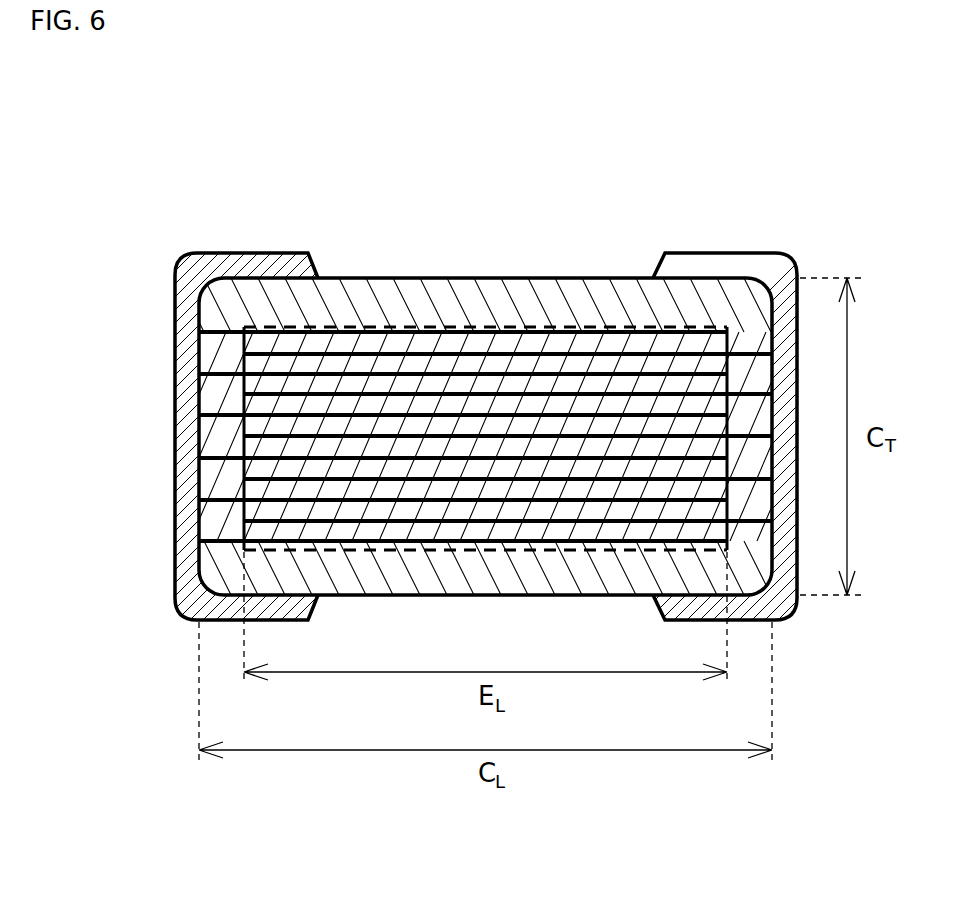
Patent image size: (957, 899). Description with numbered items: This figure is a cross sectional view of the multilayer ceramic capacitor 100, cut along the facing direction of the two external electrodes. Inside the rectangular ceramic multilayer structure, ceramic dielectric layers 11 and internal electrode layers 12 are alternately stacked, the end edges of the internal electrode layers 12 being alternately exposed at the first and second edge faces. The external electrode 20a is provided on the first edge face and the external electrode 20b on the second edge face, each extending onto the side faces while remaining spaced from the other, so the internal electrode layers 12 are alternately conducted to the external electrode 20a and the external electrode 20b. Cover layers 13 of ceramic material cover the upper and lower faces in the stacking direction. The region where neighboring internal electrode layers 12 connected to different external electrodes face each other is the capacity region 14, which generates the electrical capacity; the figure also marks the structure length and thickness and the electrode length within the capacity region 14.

The multilayer ceramic capacitor 100 is at (705, 179).
The ceramic dielectric layer 11 is at (577, 343).
The internal electrode layer 12 is at (457, 345).
The cover layer 13 is at (385, 293).
The capacity region 14 is at (518, 325).
The external electrode 20a is at (198, 252).
The external electrode 20b is at (762, 253).